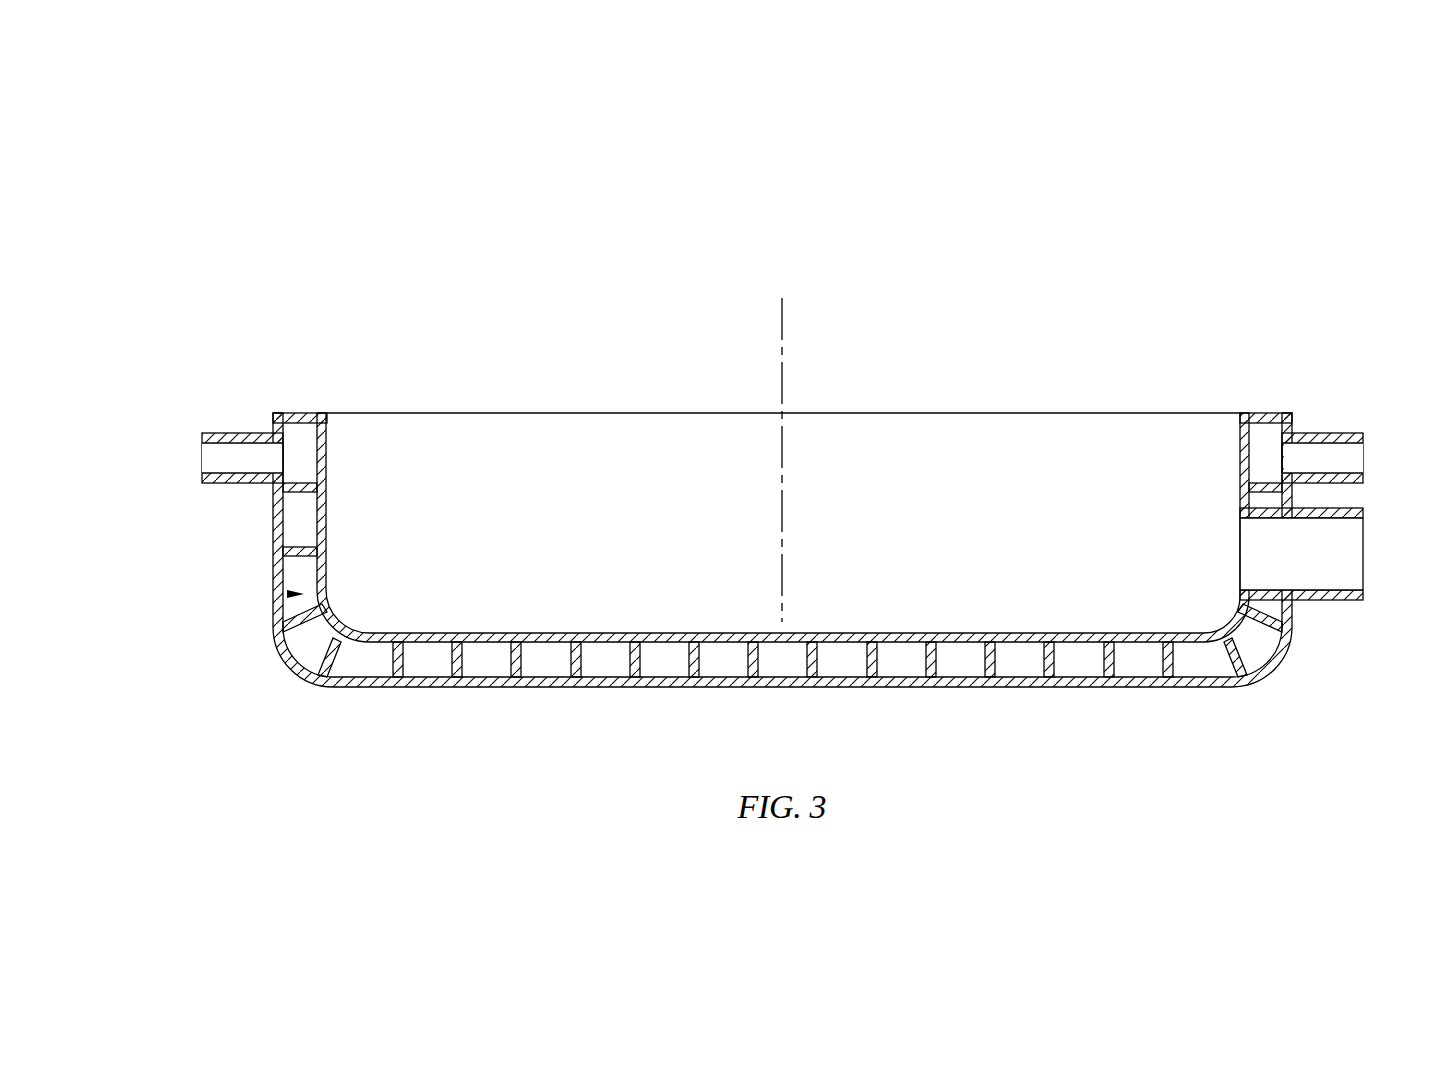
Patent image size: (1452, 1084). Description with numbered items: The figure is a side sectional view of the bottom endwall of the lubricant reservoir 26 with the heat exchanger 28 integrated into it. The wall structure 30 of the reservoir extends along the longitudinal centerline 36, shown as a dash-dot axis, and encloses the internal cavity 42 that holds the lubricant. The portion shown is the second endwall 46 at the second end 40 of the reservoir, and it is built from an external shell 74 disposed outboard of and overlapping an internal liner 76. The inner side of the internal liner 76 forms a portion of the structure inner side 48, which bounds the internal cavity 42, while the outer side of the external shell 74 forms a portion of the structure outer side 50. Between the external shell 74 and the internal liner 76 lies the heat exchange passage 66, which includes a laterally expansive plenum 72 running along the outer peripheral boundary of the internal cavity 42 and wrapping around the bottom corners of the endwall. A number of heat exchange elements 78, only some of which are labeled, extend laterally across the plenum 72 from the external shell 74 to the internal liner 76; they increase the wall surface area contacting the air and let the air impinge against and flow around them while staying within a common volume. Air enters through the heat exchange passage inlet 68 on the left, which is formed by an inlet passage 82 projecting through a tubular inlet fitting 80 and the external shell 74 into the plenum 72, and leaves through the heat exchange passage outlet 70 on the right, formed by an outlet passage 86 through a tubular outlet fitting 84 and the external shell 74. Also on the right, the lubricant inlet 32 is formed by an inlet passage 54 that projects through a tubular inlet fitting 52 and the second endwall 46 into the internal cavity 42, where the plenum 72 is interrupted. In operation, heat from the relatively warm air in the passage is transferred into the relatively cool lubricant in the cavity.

The lubricant reservoir 26 is at (1305, 255).
The heat exchanger 28 is at (785, 521).
The wall structure 30 is at (785, 521).
The second endwall 46 is at (1148, 340).
The lubricant inlet 32 is at (1338, 602).
The inlet fitting 52 is at (1338, 602).
The inlet passage 54 is at (1343, 556).
The longitudinal centerline 36 is at (783, 305).
The second end 40 is at (782, 597).
The internal cavity 42 is at (680, 508).
The inner side 48 is at (953, 618).
The outer side 50 is at (776, 688).
The heat exchange passage 66 is at (277, 600).
The heat exchange passage inlet 68 is at (209, 414).
The inlet fitting 80 is at (209, 414).
The inlet passage 82 is at (237, 422).
The heat exchange passage outlet 70 is at (1355, 410).
The outlet fitting 84 is at (1355, 410).
The outlet passage 86 is at (1328, 420).
The plenum 72 is at (365, 662).
The external shell 74 is at (782, 597).
The internal liner 76 is at (783, 527).
The heat exchange elements 78 is at (305, 547).